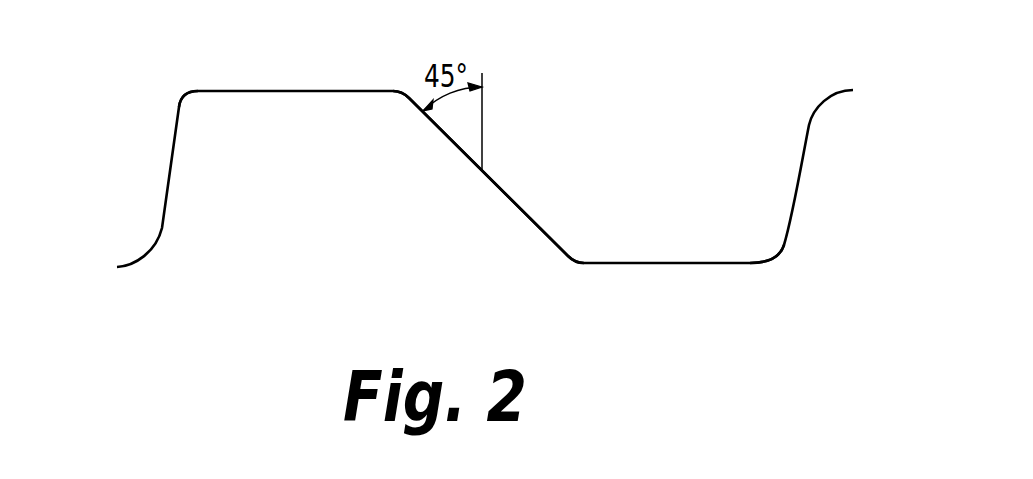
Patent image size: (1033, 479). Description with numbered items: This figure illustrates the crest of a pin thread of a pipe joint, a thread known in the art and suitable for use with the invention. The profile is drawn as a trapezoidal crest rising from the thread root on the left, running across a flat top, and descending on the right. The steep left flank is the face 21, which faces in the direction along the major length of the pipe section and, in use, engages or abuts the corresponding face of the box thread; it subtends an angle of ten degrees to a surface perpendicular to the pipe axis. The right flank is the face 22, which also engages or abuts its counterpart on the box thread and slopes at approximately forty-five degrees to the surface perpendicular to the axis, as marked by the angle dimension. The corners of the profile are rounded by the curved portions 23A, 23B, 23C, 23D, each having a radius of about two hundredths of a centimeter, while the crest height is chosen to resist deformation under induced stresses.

The face 21 is at (170, 172).
The face 22 is at (485, 167).
The curved portion 23A is at (191, 102).
The curved portion 23B is at (408, 94).
The curved portion 23C is at (575, 258).
The curved portion 23D is at (779, 253).